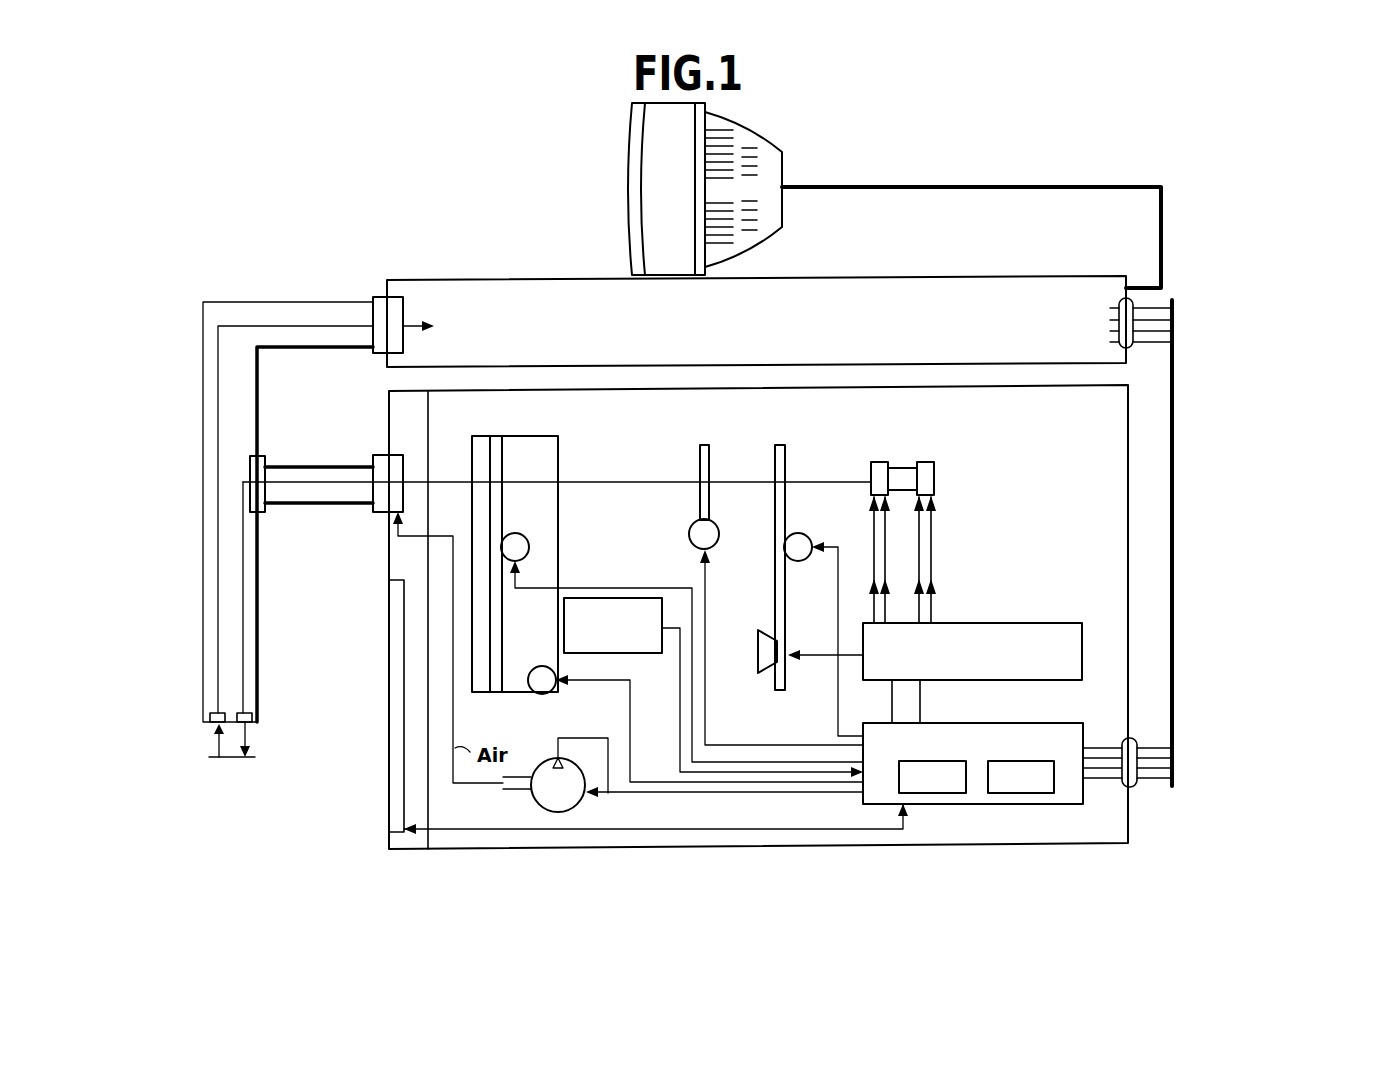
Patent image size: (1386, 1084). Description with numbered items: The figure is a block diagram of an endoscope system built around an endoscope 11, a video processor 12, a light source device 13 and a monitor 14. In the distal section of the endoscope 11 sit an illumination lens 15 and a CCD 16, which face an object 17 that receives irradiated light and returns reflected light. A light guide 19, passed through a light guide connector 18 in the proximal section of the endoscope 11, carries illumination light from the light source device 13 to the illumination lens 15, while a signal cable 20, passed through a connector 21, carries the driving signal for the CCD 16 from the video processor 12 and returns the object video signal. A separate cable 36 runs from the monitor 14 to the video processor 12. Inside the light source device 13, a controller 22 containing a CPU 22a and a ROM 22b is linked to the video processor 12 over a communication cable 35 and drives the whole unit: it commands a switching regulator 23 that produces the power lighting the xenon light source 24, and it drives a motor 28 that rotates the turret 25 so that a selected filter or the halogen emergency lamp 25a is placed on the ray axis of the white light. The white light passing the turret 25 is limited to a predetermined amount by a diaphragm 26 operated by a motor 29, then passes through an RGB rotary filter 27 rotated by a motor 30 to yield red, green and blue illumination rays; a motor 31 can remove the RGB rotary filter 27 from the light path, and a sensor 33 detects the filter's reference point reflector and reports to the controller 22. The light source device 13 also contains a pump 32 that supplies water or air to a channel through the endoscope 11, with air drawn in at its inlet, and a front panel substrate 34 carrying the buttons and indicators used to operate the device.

The endoscope 11 is at (203, 487).
The video processor 12 is at (932, 278).
The light source device 13 is at (773, 848).
The monitor 14 is at (627, 192).
The illumination lens 15 is at (235, 713).
The CCD 16 is at (210, 714).
The object 17 is at (233, 759).
The light guide connector 18 is at (305, 470).
The light guide 19 is at (245, 612).
The signal cable 20 is at (218, 550).
The connector 21 is at (376, 297).
The controller 22 is at (973, 765).
The CPU 22a is at (947, 793).
The ROM 22b is at (1033, 793).
The switching regulator 23 is at (1005, 623).
The light source 24 is at (930, 462).
The turret 25 is at (781, 446).
The emergency lamp 25a is at (757, 658).
The diaphragm 26 is at (705, 445).
The RGB rotary filter 27 is at (512, 436).
The motor 28 is at (805, 533).
The motor 29 is at (715, 526).
The motor 30 is at (529, 547).
The motor 31 is at (531, 688).
The pump 32 is at (578, 797).
The sensor 33 is at (645, 655).
The front panel substrate 34 is at (397, 812).
The communication cable 35 is at (1175, 497).
The cable 36 is at (1020, 186).